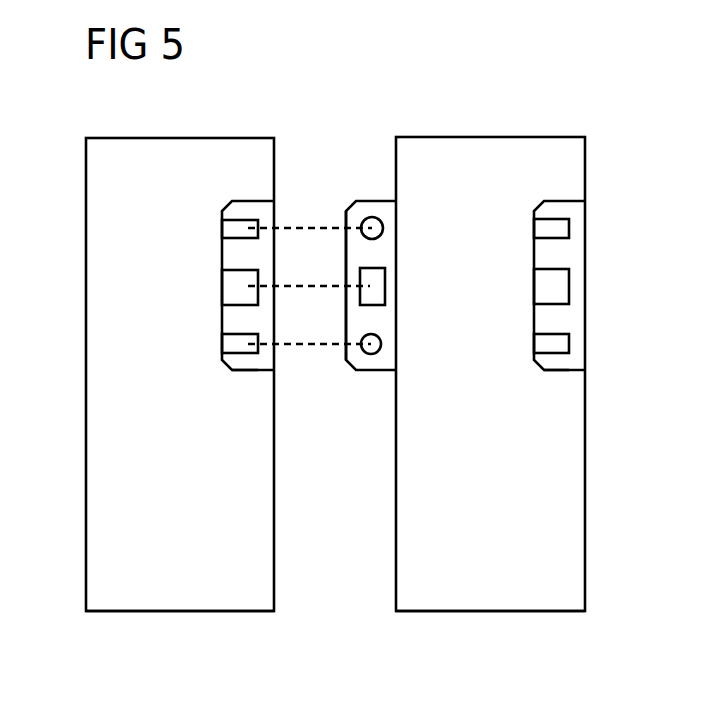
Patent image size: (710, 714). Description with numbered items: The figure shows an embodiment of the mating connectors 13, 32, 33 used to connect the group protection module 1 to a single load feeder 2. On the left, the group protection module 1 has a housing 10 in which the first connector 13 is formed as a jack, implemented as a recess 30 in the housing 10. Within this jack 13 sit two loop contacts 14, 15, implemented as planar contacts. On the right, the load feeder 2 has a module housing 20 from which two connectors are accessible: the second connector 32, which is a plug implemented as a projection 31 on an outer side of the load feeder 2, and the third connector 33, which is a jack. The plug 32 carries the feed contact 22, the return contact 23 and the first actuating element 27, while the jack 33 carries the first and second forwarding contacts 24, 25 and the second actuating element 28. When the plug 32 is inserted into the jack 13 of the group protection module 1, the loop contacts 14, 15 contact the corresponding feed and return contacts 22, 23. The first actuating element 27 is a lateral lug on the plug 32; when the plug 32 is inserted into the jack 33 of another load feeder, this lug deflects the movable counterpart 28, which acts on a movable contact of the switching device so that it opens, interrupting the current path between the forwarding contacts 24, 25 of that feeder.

The group protection module 1 is at (178, 600).
The load feeder 2 is at (496, 600).
The housing 10 is at (274, 169).
The module housing 20 is at (585, 168).
The first connector 13 is at (224, 368).
The first loop contact 14 is at (230, 230).
The second loop contact 15 is at (230, 346).
The feed contact 22 is at (372, 217).
The return contact 23 is at (371, 355).
The first forwarding contact 24 is at (565, 230).
The second forwarding contact 25 is at (565, 346).
The first actuating element 27 is at (367, 293).
The second actuating element 28 is at (563, 290).
The recess 30 is at (243, 362).
The projection 31 is at (355, 260).
The second connector 32 is at (352, 369).
The third connector 33 is at (568, 370).